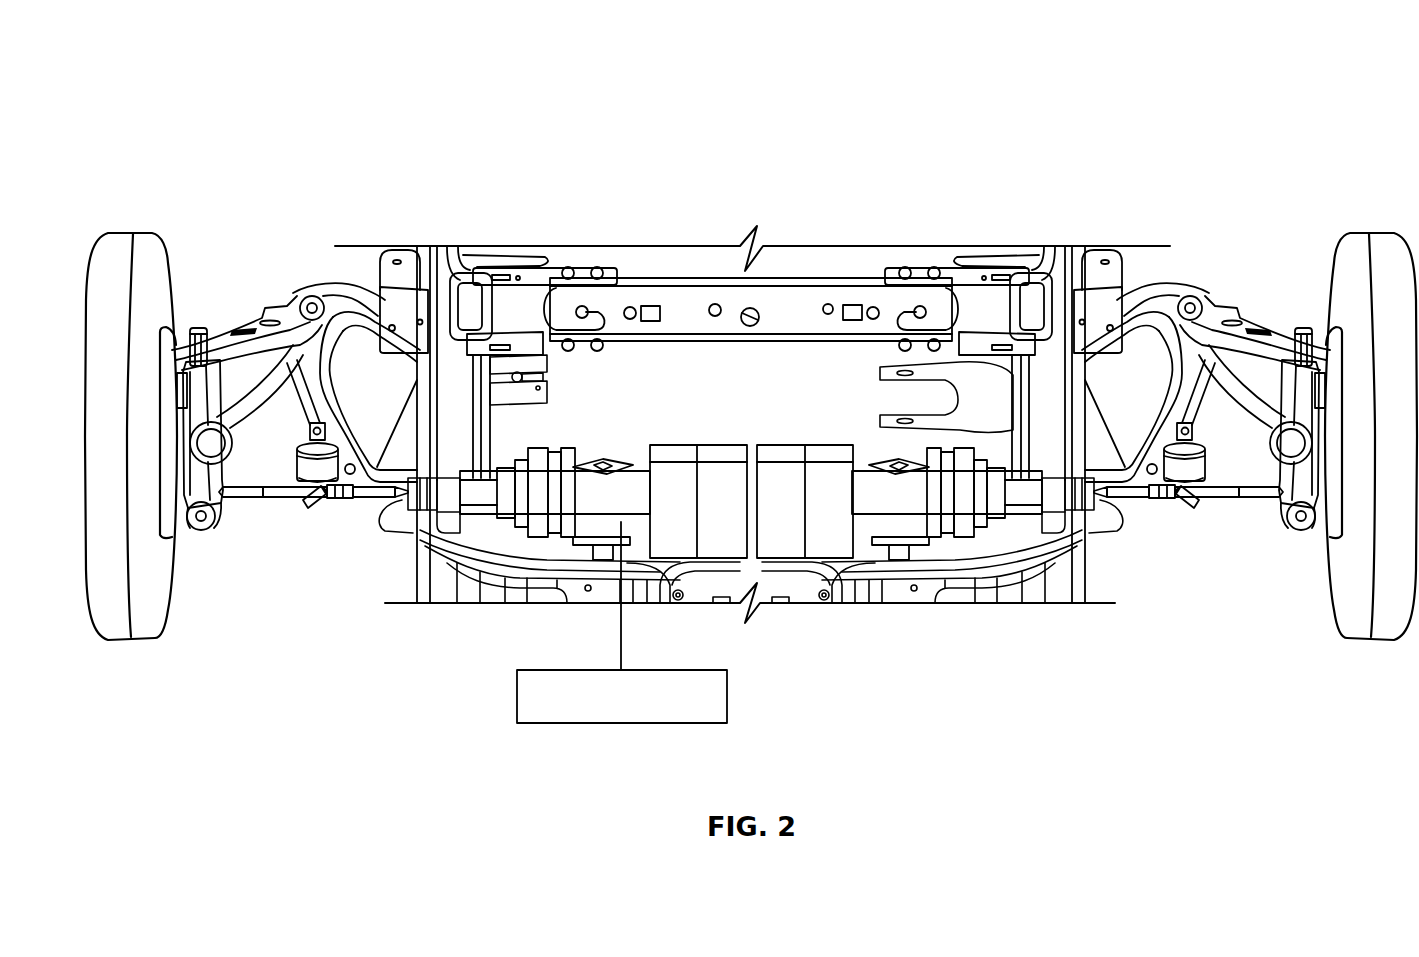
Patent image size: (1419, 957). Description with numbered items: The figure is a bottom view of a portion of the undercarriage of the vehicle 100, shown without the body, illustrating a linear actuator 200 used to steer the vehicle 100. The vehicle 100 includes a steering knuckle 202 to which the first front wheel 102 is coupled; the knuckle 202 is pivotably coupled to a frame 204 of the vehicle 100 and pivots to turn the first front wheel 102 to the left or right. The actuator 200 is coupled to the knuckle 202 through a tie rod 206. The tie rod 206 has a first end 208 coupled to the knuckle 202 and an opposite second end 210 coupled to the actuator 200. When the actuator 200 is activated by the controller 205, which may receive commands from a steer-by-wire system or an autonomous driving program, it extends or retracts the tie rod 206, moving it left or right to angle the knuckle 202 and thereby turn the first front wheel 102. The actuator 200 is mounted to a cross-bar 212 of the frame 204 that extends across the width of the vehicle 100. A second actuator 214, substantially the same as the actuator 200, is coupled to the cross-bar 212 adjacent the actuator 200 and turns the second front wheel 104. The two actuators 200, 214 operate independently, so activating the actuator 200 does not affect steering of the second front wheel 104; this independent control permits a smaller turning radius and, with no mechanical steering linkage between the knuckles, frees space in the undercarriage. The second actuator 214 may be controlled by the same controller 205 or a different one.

The vehicle 100 is at (268, 120).
The first front wheel 102 is at (132, 628).
The second front wheel 104 is at (1372, 628).
The actuator 200 is at (614, 434).
The steering knuckle 202 is at (200, 327).
The frame 204 is at (693, 305).
The controller 205 is at (653, 670).
The tie rod 206 is at (330, 498).
The first end 208 is at (225, 497).
The second end 210 is at (400, 527).
The cross-bar 212 is at (512, 585).
The second actuator 214 is at (864, 432).